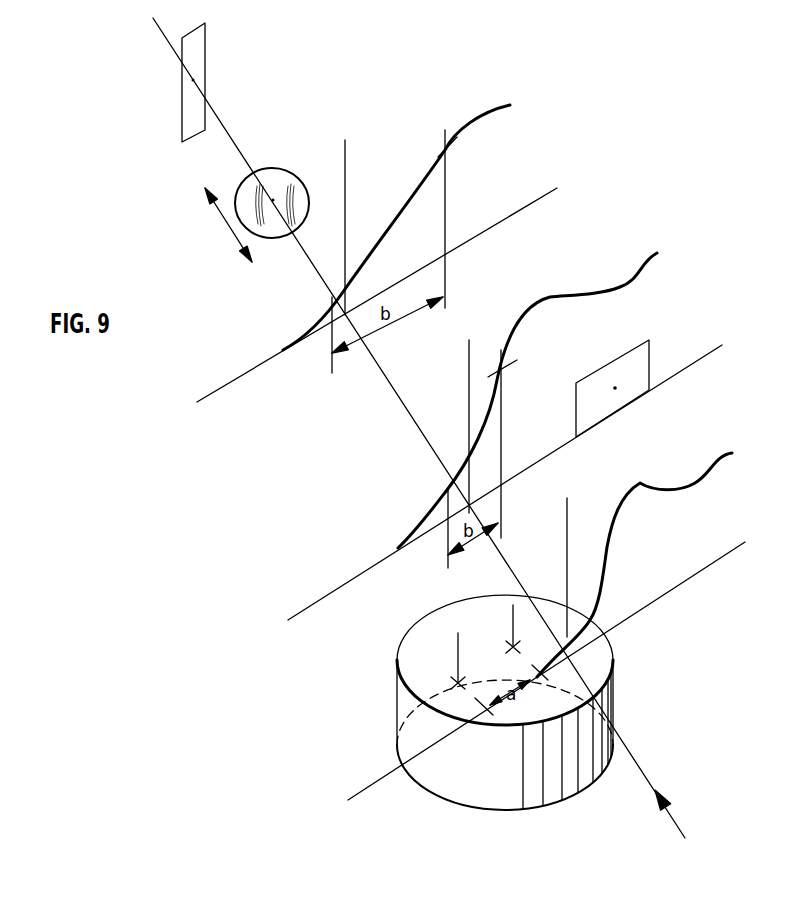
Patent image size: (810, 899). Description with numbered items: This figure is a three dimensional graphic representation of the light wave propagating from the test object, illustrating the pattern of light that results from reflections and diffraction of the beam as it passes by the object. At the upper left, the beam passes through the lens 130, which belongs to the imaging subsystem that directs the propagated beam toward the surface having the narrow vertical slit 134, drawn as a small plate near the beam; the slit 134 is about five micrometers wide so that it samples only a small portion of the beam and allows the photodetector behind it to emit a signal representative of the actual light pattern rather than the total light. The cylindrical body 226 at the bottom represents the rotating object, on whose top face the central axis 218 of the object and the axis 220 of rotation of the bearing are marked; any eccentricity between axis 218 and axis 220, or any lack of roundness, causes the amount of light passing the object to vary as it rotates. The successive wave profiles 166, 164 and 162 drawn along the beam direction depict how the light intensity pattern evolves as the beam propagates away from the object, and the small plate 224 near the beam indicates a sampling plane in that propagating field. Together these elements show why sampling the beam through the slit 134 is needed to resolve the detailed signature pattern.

The slit 134 is at (212, 47).
The lens 130 is at (277, 167).
The intensity curve 166 is at (410, 203).
The intensity curve 164 is at (583, 290).
The intensity curve 162 is at (556, 640).
The detector plate 224 is at (615, 388).
The cylindrical sample 226 is at (477, 797).
The central axis 218 is at (512, 622).
The axis of rotation 220 is at (455, 660).